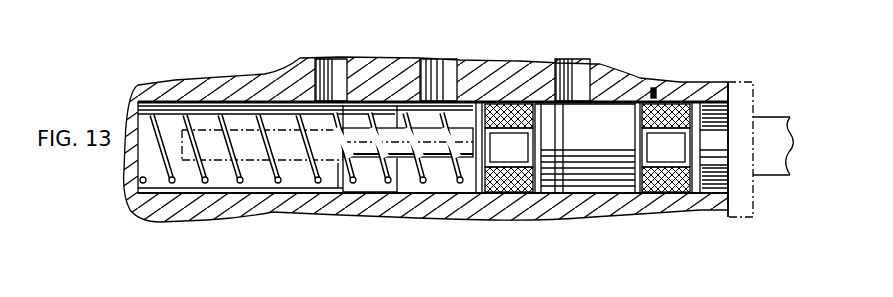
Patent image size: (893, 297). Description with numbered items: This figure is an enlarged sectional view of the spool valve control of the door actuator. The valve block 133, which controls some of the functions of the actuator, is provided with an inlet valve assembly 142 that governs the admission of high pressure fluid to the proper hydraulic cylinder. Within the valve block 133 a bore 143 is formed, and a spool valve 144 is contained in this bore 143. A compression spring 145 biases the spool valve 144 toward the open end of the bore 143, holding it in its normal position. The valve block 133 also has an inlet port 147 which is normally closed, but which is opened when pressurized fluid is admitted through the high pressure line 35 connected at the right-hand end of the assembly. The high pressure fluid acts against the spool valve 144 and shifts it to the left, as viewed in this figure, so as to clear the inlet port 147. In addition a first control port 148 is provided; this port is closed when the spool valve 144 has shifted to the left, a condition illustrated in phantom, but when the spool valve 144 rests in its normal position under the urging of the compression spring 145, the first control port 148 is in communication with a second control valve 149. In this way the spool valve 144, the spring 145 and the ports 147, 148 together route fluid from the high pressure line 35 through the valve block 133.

The valve block 133 is at (528, 70).
The second control valve 149 is at (342, 64).
The first control port 148 is at (445, 70).
The inlet port 147 is at (583, 70).
The bore 143 is at (331, 190).
The compression spring 145 is at (203, 183).
The inlet valve assembly 142 is at (656, 97).
The spool valve 144 is at (700, 190).
The high pressure line 35 is at (774, 130).